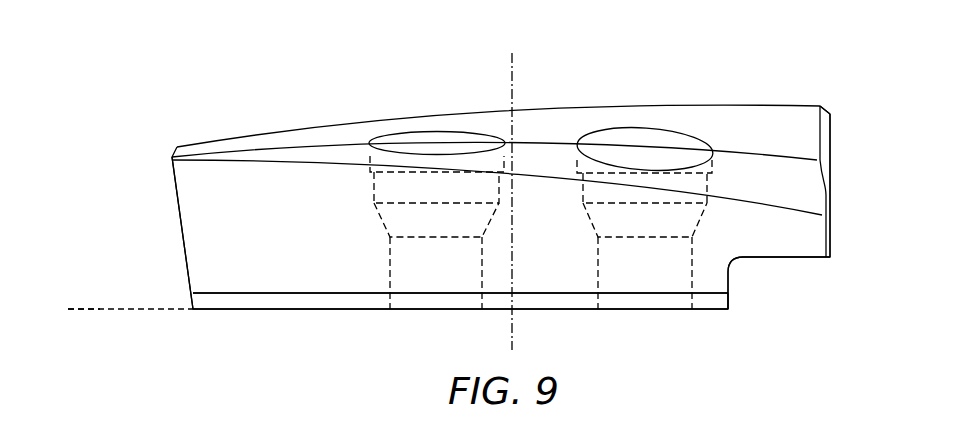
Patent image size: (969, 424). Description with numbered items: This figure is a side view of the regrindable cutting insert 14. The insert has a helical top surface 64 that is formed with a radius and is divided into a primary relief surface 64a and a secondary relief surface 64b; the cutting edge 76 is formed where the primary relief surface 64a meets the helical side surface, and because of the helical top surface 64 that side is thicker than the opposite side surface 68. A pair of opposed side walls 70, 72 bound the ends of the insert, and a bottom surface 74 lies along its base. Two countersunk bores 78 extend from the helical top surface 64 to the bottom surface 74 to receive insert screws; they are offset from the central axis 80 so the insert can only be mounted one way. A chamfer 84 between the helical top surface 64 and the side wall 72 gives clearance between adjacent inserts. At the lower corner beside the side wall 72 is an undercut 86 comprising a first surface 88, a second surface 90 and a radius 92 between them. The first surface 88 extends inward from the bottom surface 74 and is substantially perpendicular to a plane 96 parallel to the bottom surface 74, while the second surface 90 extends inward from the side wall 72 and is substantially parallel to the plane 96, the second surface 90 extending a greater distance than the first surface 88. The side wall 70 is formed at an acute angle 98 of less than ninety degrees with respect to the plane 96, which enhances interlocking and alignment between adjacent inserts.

The cutting insert 14 is at (223, 86).
The helical top surface 64 is at (548, 122).
The primary relief surface 64a is at (732, 120).
The secondary relief surface 64b is at (745, 180).
The side surface 68 is at (337, 265).
The side wall 70 is at (182, 263).
The side wall 72 is at (838, 195).
The bottom surface 74 is at (623, 318).
The cutting edge 76 is at (660, 105).
The countersunk bores 78 is at (415, 145).
The central axis 80 is at (512, 70).
The chamfer 84 is at (828, 110).
The undercut 86 is at (775, 310).
The first surface 88 is at (730, 290).
The second surface 90 is at (807, 258).
The radius 92 is at (733, 265).
The plane 96 is at (145, 310).
The acute angle 98 is at (87, 307).